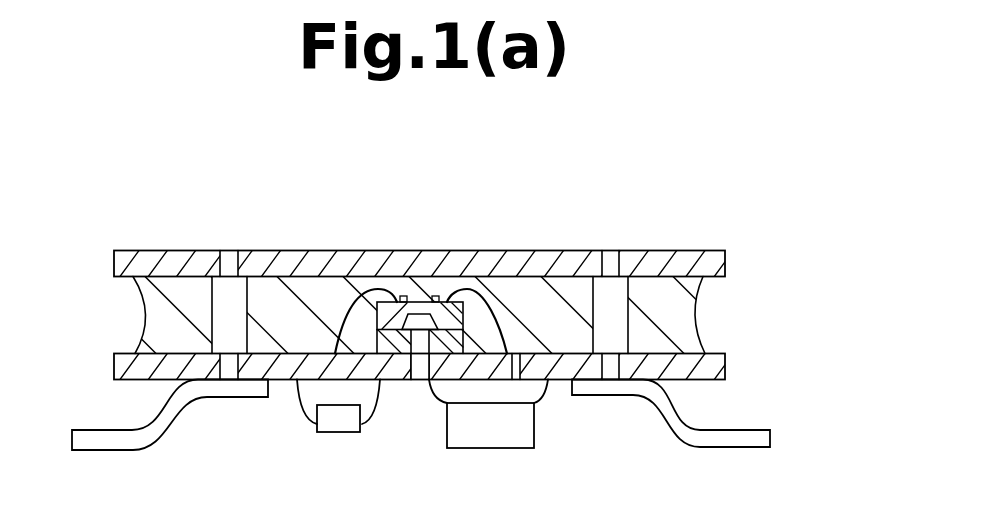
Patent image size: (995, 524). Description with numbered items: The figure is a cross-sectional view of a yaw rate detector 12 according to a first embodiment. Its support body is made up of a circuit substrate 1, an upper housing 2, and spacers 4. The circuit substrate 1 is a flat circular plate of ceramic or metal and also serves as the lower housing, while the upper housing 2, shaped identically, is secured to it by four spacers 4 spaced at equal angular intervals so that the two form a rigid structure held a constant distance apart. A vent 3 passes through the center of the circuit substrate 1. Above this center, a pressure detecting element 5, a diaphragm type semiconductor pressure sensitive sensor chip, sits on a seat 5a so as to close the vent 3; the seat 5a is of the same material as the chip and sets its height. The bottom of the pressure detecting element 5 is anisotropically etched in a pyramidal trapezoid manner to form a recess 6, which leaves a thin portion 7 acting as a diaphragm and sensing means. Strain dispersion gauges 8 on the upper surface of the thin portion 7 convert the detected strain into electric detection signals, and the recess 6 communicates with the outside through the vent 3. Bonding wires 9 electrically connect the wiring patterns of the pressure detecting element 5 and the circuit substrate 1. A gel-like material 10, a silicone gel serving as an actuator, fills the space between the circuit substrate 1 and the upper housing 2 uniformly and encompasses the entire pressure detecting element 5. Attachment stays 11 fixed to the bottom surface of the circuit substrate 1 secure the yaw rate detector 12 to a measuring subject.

The circuit substrate 1 is at (725, 367).
The upper housing 2 is at (725, 253).
The vent 3 is at (418, 380).
The spacer 4 is at (247, 294).
The pressure detecting element 5 is at (470, 308).
The seat 5a is at (466, 337).
The recess 6 is at (376, 324).
The thin portion 7 is at (436, 296).
The strain dispersion gauge 8 is at (403, 296).
The bonding wire 9 is at (484, 299).
The gel-like material 10 is at (695, 311).
The attachment stay 11 is at (213, 392).
The yaw rate detector 12 is at (575, 225).